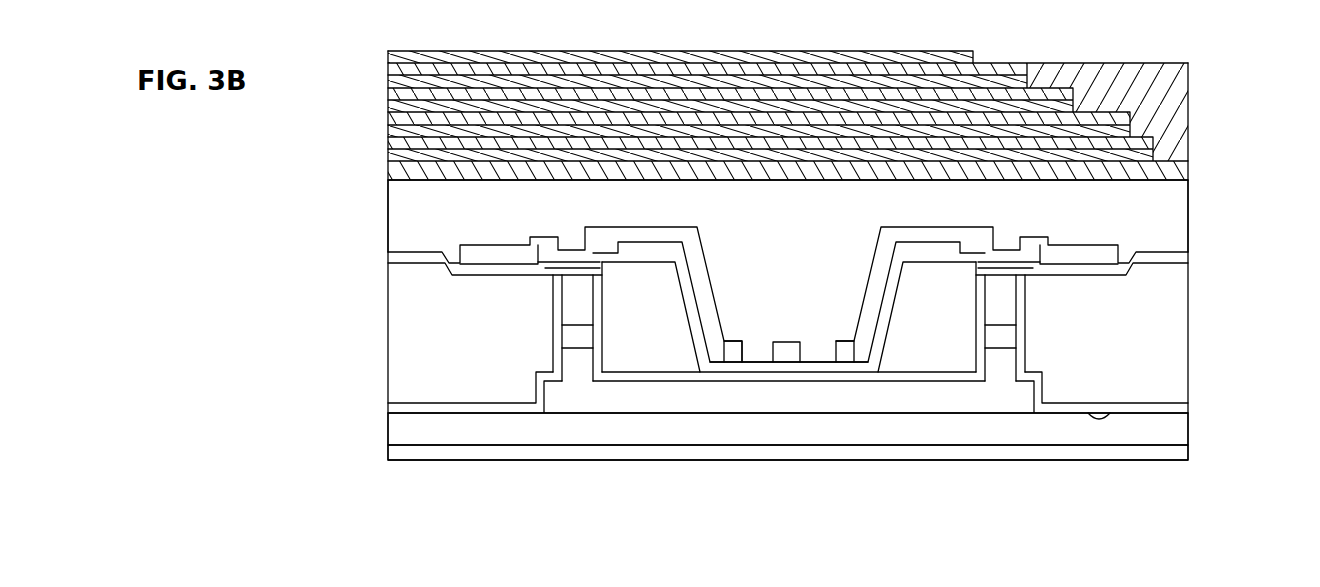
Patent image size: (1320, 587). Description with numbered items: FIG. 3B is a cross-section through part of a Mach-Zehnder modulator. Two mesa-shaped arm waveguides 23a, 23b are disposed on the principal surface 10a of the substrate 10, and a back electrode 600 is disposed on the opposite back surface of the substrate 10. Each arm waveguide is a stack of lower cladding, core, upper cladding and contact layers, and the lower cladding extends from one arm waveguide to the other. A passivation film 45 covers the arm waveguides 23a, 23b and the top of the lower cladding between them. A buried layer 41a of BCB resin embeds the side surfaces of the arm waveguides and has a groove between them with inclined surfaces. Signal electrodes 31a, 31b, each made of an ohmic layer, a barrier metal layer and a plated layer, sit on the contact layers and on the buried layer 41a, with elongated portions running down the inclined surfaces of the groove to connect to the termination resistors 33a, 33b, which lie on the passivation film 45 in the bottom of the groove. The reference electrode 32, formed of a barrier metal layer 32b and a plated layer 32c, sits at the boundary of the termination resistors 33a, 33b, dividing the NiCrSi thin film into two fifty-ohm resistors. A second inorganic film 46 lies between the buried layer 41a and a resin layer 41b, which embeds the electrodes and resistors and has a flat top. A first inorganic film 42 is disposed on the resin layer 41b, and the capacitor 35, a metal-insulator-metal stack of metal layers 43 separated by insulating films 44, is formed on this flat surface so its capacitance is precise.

The substrate 10 is at (1190, 438).
The principal surface 10a is at (1108, 414).
The arm waveguide 23a is at (1090, 284).
The arm waveguide 23b is at (488, 284).
The signal electrode 31a is at (1095, 212).
The signal electrode 31b is at (575, 212).
The reference electrode 32 is at (838, 246).
The barrier metal layer 32b is at (806, 362).
The plated layer 32c is at (776, 342).
The termination resistor 33a is at (835, 352).
The termination resistor 33b is at (746, 352).
The capacitor 35 is at (1252, 48).
The buried layer 41a is at (398, 297).
The resin layer 41b is at (1190, 208).
The first inorganic film 42 is at (1190, 176).
The metal layers 43 is at (388, 157).
The insulating films 44 is at (1170, 93).
The passivation film 45 is at (388, 408).
The second inorganic film 46 is at (388, 258).
The back electrode 600 is at (1190, 459).